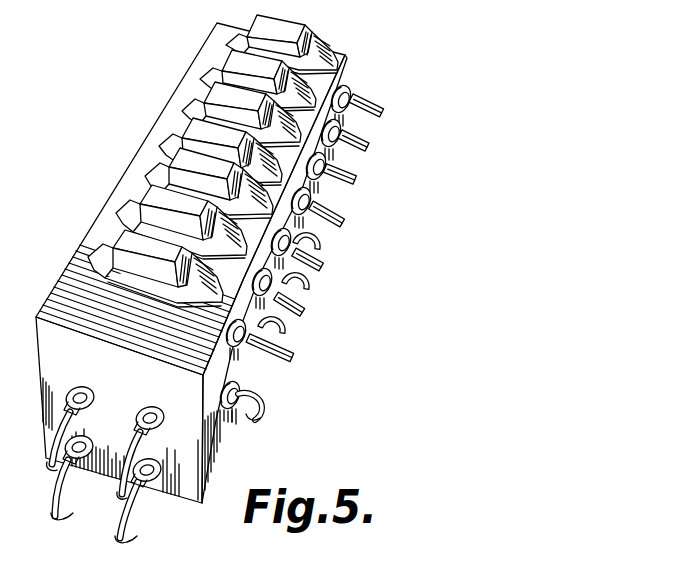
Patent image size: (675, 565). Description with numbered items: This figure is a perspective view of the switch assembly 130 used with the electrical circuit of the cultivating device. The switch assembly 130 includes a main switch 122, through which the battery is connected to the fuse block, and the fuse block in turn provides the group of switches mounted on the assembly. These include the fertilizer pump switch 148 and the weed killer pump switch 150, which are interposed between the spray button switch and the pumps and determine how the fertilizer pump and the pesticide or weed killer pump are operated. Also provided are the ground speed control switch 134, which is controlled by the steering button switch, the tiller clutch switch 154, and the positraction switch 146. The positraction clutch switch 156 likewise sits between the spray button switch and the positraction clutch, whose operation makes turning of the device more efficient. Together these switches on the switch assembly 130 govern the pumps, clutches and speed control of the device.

The switch assembly 130 is at (191, 259).
The main switch 122 is at (380, 107).
The fertilizer pump switch 148 is at (367, 144).
The weed killer pump switch 150 is at (357, 177).
The speed control switch 134 is at (341, 221).
The tiller clutch switch 154 is at (321, 265).
The positraction switch 146 is at (301, 308).
The positraction clutch switch 156 is at (284, 355).